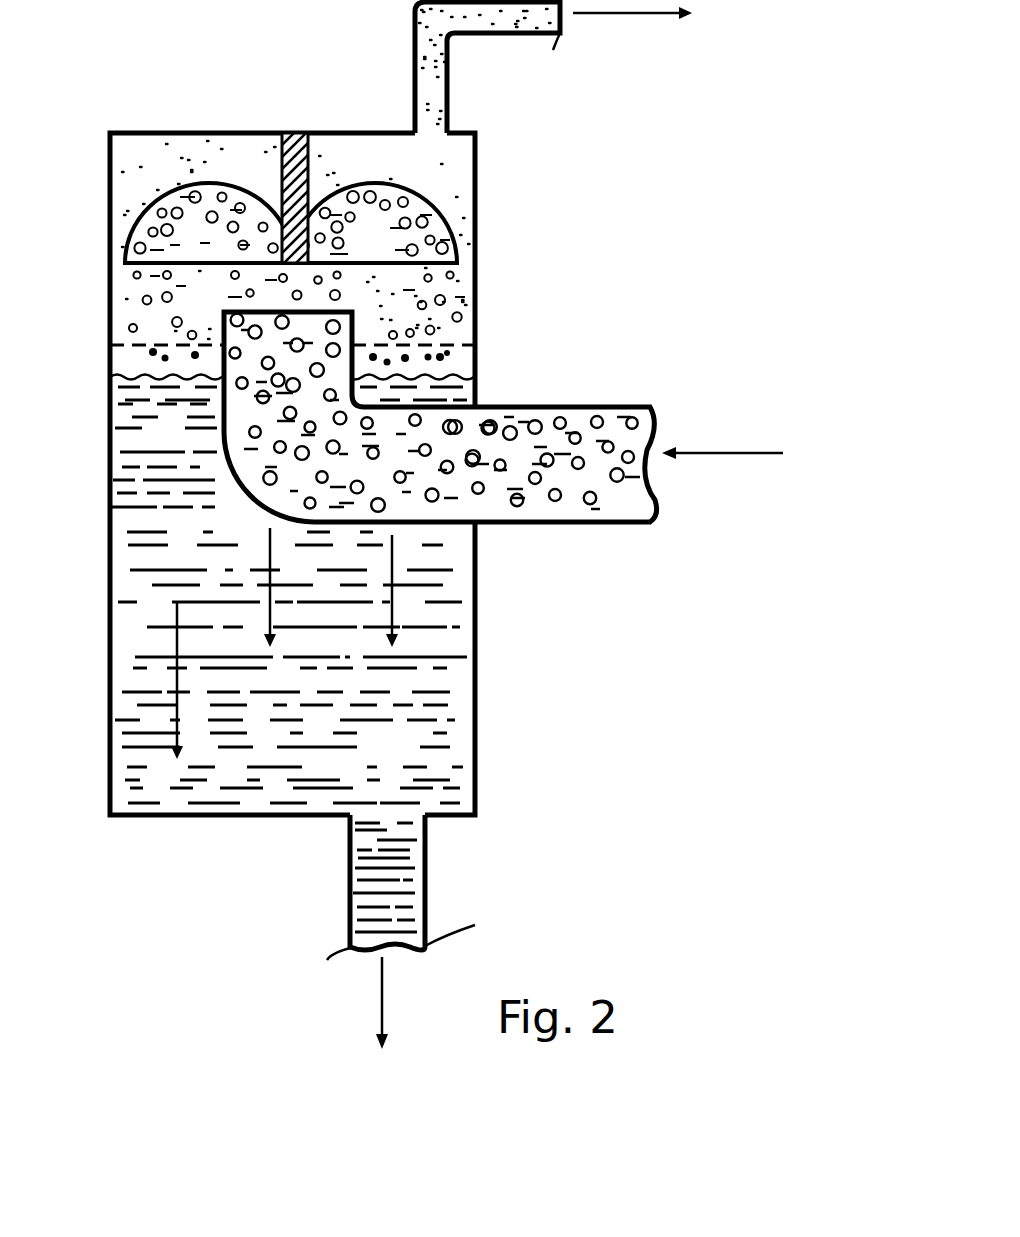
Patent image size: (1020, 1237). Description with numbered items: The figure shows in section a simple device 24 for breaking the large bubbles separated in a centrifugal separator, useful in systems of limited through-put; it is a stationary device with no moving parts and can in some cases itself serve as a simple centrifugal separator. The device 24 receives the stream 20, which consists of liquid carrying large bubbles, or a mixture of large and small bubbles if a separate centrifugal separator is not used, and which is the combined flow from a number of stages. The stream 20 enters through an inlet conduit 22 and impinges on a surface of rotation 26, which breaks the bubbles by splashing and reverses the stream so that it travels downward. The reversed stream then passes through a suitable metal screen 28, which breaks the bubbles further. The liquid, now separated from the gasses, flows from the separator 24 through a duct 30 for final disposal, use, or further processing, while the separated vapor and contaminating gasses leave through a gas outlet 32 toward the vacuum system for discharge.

The stream 20 is at (568, 507).
The inlet conduit 22 is at (503, 454).
The device 24 is at (480, 732).
The surface of rotation 26 is at (433, 193).
The metal screen 28 is at (442, 340).
The duct 30 is at (432, 887).
The gas outlet 32 is at (528, 43).